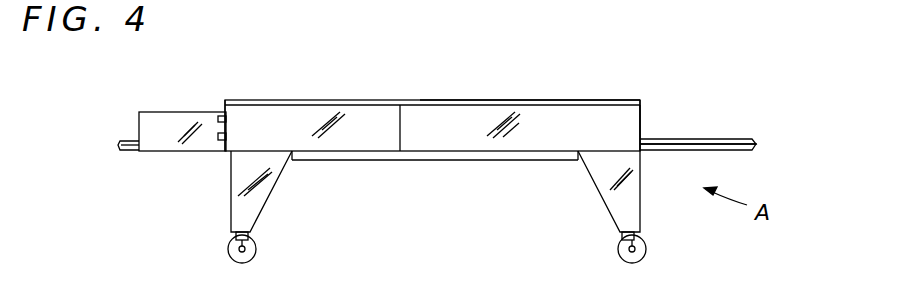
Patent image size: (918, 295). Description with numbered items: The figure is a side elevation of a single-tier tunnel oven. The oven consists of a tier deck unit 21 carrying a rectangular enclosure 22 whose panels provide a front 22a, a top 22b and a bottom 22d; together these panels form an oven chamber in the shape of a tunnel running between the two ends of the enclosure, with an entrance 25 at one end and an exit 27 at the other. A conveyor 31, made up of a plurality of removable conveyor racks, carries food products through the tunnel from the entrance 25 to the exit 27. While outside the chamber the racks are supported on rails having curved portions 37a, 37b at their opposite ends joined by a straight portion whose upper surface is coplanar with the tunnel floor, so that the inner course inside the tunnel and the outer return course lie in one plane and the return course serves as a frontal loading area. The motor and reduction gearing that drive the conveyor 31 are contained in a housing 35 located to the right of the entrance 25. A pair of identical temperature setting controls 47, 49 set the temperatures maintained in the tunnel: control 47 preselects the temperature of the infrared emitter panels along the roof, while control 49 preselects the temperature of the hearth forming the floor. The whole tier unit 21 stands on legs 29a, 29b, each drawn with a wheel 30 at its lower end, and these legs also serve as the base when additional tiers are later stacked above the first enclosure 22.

The tier deck unit 21 is at (333, 107).
The enclosure 22 is at (640, 103).
The front panel 22a is at (505, 80).
The top panel 22b is at (603, 68).
The bottom panel 22d is at (395, 162).
The entrance 25 is at (224, 101).
The exit 27 is at (642, 122).
The leg 29a is at (270, 197).
The leg 29b is at (597, 188).
The caster wheel 30 is at (256, 244).
The conveyor 31 is at (725, 139).
The housing 35 is at (139, 113).
The curved rail portion 37a is at (737, 152).
The curved rail portion 37b is at (135, 152).
The temperature setting control 47 is at (218, 119).
The temperature setting control 49 is at (218, 137).